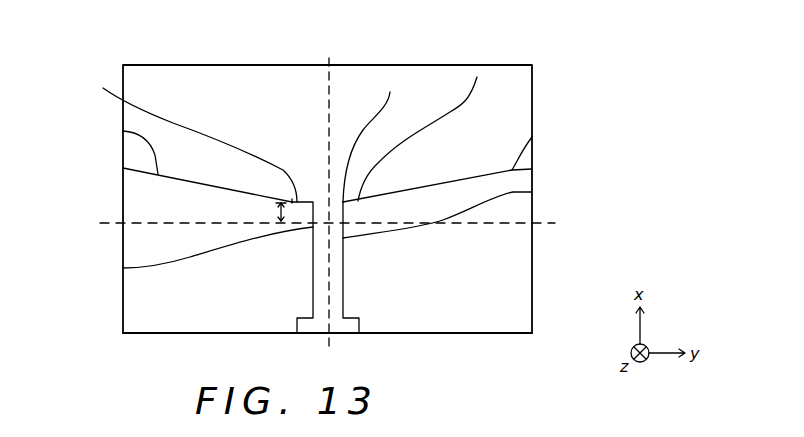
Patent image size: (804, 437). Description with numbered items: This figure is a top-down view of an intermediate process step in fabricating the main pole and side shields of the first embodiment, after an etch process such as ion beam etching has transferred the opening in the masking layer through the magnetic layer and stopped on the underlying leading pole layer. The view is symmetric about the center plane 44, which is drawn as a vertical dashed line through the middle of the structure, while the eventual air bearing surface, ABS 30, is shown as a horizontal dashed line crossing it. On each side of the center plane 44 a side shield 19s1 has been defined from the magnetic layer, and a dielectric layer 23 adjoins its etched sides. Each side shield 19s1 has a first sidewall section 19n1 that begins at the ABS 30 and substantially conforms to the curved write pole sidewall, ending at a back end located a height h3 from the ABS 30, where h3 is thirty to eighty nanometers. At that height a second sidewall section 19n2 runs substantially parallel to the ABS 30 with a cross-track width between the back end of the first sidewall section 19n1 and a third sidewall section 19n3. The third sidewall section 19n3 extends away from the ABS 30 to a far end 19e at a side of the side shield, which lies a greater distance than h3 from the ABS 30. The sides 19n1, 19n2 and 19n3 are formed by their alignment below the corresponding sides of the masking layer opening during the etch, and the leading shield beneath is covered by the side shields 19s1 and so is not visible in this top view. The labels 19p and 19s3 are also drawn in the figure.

The dielectric layer 23 is at (522, 90).
The center plane 44 is at (328, 201).
The ABS 30 is at (327, 224).
The pole 19p is at (390, 92).
The second sidewall section 19n2 is at (482, 52).
The third sidewall section 19n3 is at (123, 131).
The far end 19e is at (123, 168).
The third surface 19s3 is at (532, 137).
The first sidewall section 19n1 is at (123, 268).
The side shield 19s1 is at (133, 303).
The height h3 is at (269, 214).